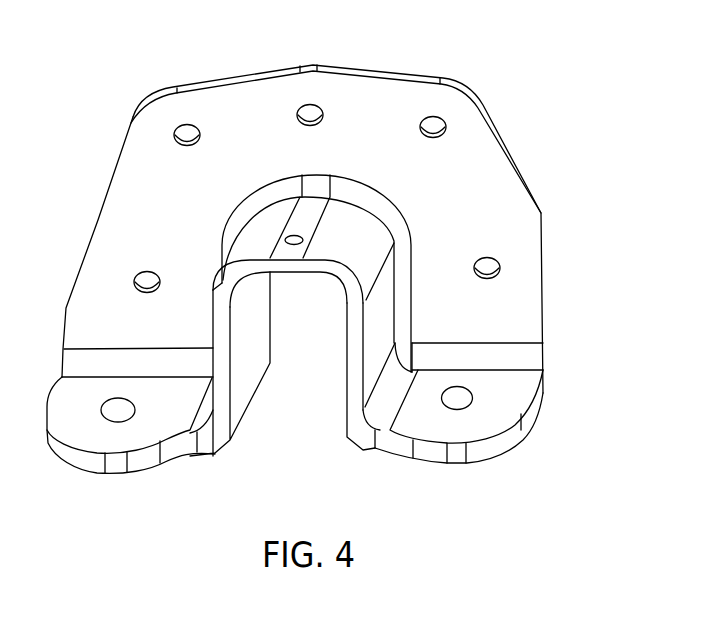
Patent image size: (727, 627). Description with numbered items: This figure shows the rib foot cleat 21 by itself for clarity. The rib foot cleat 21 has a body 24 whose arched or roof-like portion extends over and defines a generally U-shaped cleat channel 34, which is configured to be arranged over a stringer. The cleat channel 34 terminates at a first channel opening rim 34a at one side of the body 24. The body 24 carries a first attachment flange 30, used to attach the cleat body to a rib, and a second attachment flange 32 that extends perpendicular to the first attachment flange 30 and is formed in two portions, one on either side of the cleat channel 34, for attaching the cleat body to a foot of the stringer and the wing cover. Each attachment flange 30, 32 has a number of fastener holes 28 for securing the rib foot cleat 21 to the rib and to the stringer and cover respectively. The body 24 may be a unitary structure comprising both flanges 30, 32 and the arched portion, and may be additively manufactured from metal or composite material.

The rib foot cleat 21 is at (142, 162).
The body 24 is at (272, 228).
The fastener holes 28 is at (463, 395).
The first attachment flange 30 is at (387, 105).
The second attachment flange 32 is at (98, 437).
The cleat channel 34 is at (280, 449).
The first channel opening rim 34a is at (350, 382).